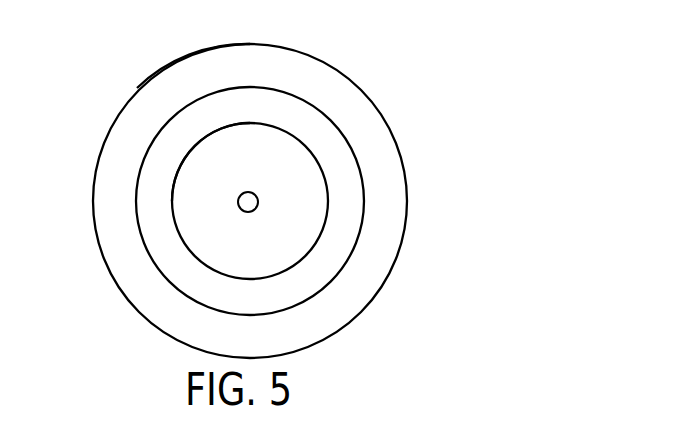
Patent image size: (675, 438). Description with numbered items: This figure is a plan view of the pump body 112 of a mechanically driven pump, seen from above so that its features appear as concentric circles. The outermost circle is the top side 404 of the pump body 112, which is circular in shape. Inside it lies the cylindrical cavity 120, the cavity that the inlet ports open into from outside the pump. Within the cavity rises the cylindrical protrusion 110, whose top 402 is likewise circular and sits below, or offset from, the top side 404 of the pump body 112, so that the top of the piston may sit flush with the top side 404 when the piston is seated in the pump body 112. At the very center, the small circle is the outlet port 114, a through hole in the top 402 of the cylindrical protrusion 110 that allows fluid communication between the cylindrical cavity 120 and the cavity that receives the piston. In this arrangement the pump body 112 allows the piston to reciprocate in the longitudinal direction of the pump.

The cylindrical protrusion 110 is at (326, 192).
The pump body 112 is at (392, 270).
The outlet port 114 is at (257, 193).
The cylindrical cavity 120 is at (313, 130).
The top of cylindrical protrusion 402 is at (207, 213).
The top side of pump body 404 is at (137, 88).